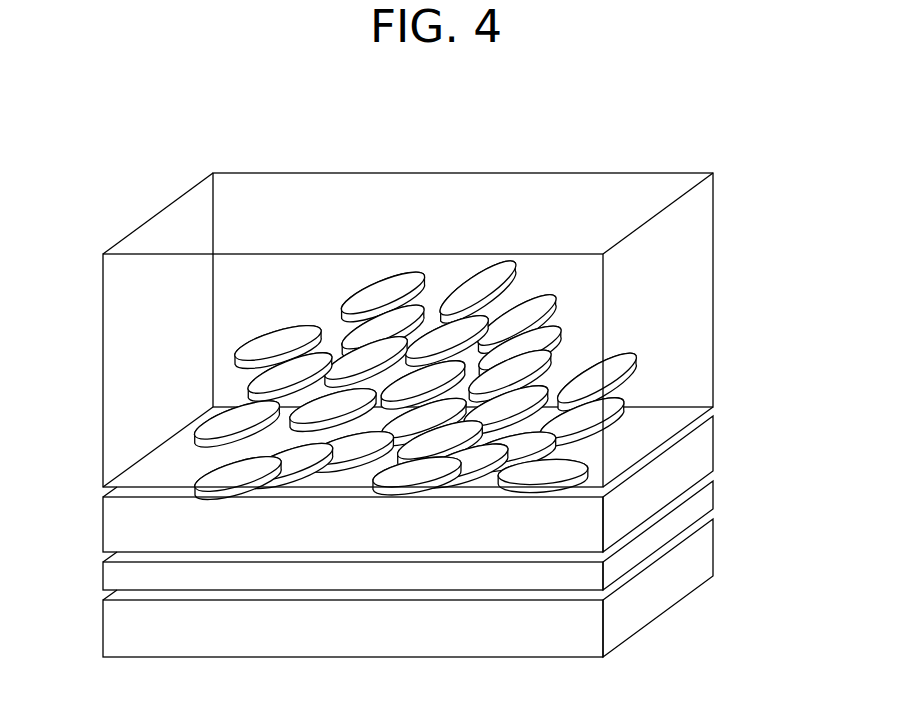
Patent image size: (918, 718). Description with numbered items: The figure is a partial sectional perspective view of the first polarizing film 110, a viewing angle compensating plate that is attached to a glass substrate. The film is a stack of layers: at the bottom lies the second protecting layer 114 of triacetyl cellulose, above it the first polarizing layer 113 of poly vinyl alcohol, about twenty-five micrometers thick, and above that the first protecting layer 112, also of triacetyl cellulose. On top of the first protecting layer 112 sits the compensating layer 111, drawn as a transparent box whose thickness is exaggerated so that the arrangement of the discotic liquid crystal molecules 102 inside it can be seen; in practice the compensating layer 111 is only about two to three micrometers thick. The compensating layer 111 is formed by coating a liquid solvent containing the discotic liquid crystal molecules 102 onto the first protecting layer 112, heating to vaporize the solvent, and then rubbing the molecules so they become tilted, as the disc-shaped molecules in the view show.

The first polarizing film 110 is at (451, 380).
The compensating layer 111 is at (408, 330).
The discotic liquid crystal molecules 102 is at (633, 368).
The first protecting layer 112 is at (707, 449).
The first polarizing layer 113 is at (707, 500).
The second protecting layer 114 is at (707, 553).